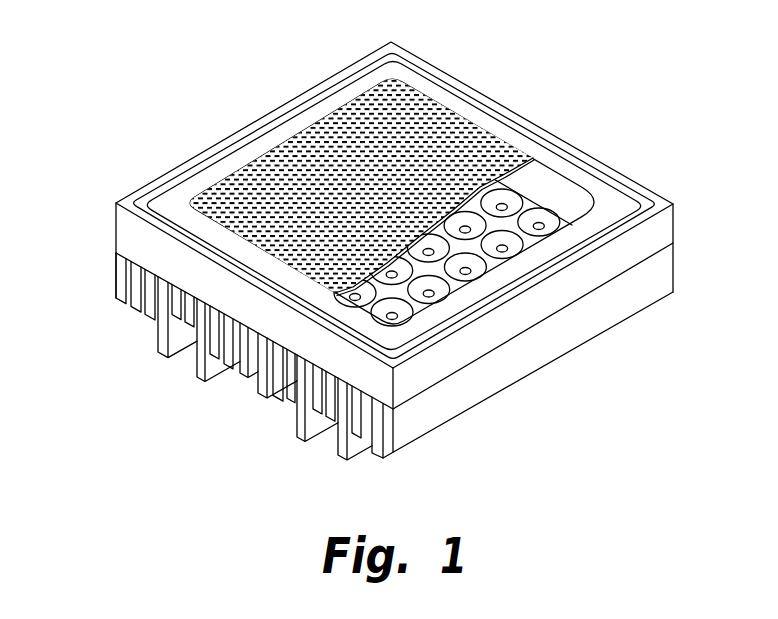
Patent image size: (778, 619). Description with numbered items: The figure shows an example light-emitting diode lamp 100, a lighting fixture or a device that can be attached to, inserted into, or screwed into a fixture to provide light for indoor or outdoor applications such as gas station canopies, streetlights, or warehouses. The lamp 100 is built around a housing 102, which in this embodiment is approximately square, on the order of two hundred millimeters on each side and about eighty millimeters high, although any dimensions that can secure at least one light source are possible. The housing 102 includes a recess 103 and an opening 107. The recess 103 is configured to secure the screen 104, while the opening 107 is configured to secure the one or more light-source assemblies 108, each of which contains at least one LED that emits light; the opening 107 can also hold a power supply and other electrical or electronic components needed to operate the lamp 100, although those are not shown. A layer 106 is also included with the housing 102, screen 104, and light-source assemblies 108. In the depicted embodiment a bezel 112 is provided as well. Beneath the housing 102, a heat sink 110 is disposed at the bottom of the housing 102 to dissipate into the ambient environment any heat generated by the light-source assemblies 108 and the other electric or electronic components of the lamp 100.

The LED lamp 100 is at (290, 62).
The housing 102 is at (397, 44).
The recess 103 is at (427, 70).
The screen 104 is at (452, 91).
The layer 106 is at (470, 123).
The opening 107 is at (550, 184).
The light-source assemblies 108 is at (367, 307).
The heat sink 110 is at (197, 331).
The bezel 112 is at (523, 123).